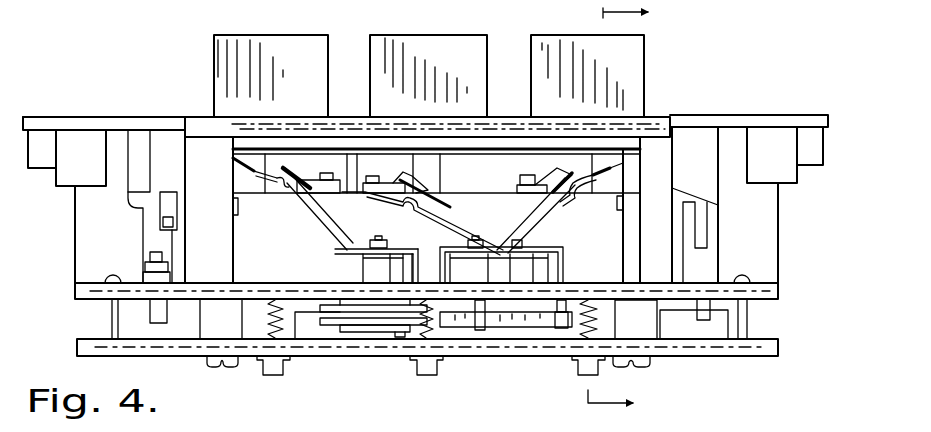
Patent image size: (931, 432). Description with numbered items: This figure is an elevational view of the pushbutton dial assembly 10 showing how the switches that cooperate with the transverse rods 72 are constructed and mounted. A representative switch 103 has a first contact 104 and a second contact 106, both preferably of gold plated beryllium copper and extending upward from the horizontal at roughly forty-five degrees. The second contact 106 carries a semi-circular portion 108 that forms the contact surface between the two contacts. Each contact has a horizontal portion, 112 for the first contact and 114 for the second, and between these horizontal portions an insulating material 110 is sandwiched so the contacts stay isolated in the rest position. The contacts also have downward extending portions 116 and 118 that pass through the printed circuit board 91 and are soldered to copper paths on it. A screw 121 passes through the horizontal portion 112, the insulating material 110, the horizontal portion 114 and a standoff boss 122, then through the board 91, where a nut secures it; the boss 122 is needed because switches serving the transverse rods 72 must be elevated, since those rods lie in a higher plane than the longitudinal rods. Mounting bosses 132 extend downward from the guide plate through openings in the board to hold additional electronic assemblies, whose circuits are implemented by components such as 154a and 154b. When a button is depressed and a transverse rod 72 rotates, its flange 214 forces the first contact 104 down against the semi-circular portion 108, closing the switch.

The switch assembly 10 is at (634, 207).
The transverse rods 72 is at (370, 168).
The printed circuit board 91 is at (778, 289).
The switch 103 is at (312, 228).
The first contact 104 is at (314, 222).
The second contact 106 is at (350, 219).
The semi-circular portion 108 is at (282, 186).
The insulating material 110 is at (352, 253).
The horizontal portion 112 is at (400, 243).
The horizontal portion 114 is at (356, 262).
The downward extending portion 116 is at (407, 268).
The downward extending portion 118 is at (462, 229).
The screw 121 is at (377, 240).
The standoff boss 122 is at (380, 272).
The mounting bosses 132 is at (652, 320).
The component 154a is at (313, 333).
The component 154b is at (723, 327).
The flange 214 is at (303, 165).